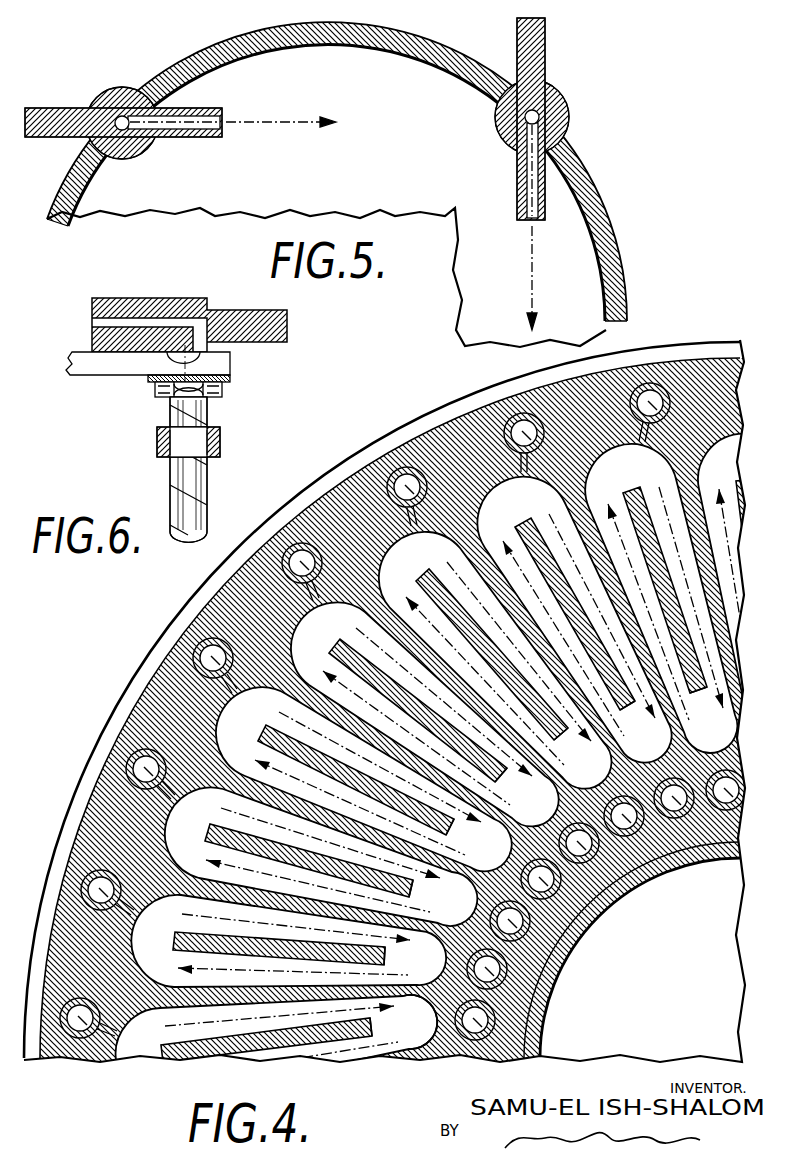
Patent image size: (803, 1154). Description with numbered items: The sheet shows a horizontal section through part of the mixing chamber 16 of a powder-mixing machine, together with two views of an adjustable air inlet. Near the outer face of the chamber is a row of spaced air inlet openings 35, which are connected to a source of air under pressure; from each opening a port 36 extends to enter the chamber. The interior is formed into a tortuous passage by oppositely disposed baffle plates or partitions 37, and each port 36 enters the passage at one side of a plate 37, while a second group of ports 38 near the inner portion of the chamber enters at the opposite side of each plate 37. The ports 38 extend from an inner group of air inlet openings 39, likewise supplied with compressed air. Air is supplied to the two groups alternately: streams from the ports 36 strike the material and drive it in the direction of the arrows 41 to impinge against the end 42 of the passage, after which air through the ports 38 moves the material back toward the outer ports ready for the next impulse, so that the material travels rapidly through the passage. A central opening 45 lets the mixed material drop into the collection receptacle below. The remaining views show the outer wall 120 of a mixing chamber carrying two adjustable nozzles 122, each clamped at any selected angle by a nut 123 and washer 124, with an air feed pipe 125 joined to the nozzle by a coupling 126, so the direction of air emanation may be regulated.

In FIG. 4, the mixing chamber 16 is at (203, 608).
In FIG. 4, the air inlet openings 35 is at (400, 467).
In FIG. 4, the ports 36 is at (144, 912).
In FIG. 4, the baffle plates or partitions 37 is at (380, 949).
In FIG. 4, the ports 38 is at (503, 848).
In FIG. 4, the air inlet openings 39 is at (520, 1005).
In FIG. 4, the arrows 41 is at (258, 762).
In FIG. 4, the end of the passage 42 is at (406, 1050).
In FIG. 4, the central opening 45 is at (571, 944).
In FIG. 5, the outer wall of a mixing chamber 120 is at (592, 178).
In FIG. 6, the outer wall of a mixing chamber 120 is at (98, 368).
In FIG. 5, the adjustable nozzles 122 is at (133, 63).
In FIG. 6, the adjustable nozzles 122 is at (130, 303).
In FIG. 6, the nut 123 is at (224, 390).
In FIG. 6, the washer 124 is at (232, 380).
In FIG. 6, the air feed pipe 125 is at (197, 505).
In FIG. 6, the coupling 126 is at (221, 441).